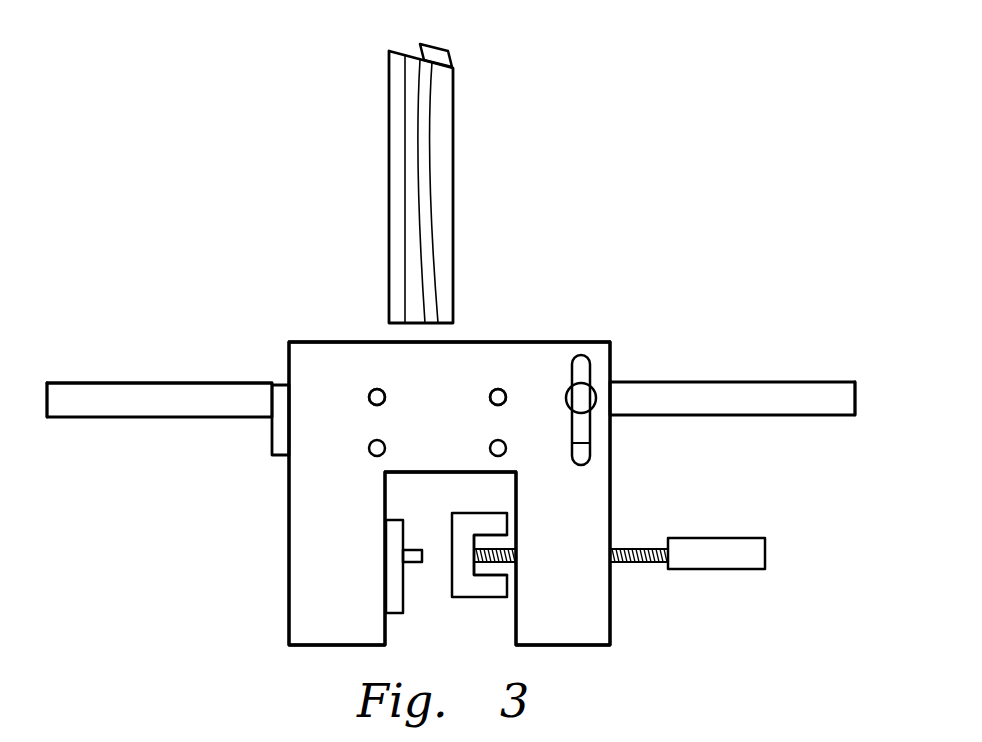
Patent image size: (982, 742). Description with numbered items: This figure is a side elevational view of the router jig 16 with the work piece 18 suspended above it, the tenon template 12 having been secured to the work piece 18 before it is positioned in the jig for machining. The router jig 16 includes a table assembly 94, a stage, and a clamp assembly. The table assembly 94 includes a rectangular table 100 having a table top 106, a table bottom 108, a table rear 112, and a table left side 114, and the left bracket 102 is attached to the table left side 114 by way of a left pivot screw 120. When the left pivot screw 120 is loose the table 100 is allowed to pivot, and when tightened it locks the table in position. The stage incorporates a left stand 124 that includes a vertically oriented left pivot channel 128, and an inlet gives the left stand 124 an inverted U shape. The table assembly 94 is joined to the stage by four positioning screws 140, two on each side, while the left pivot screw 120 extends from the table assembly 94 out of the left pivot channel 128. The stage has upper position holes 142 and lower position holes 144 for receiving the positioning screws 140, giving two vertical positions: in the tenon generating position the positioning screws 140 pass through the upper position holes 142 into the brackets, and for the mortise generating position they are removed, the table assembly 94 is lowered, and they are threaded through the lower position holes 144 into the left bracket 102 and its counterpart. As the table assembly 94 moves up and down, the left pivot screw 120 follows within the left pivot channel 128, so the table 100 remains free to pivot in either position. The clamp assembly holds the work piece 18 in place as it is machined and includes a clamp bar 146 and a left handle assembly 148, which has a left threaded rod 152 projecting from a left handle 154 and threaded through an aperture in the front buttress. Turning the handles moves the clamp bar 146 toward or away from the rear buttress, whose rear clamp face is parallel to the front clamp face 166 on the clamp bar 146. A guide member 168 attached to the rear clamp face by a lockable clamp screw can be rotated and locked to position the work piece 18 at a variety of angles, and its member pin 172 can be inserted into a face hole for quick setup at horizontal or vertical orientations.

The tenon template 12 is at (438, 55).
The router jig 16 is at (252, 545).
The work piece 18 is at (410, 180).
The table assembly 94 is at (267, 465).
The table 100 is at (735, 398).
The left bracket 102 is at (282, 428).
The table top 106 is at (813, 380).
The table bottom 108 is at (95, 418).
The table rear 112 is at (58, 397).
The table left side 114 is at (213, 382).
The left pivot screw 120 is at (582, 397).
The left stand 124 is at (333, 393).
The left pivot channel 128 is at (578, 370).
The positioning screws 140 is at (367, 396).
The upper position holes 142 is at (493, 390).
The lower position holes 144 is at (493, 440).
The clamp bar 146 is at (487, 592).
The left handle assembly 148 is at (715, 582).
The left threaded rod 152 is at (642, 563).
The left handle 154 is at (752, 555).
The front clamp face 166 is at (452, 528).
The guide member 168 is at (393, 542).
The member pin 172 is at (413, 557).